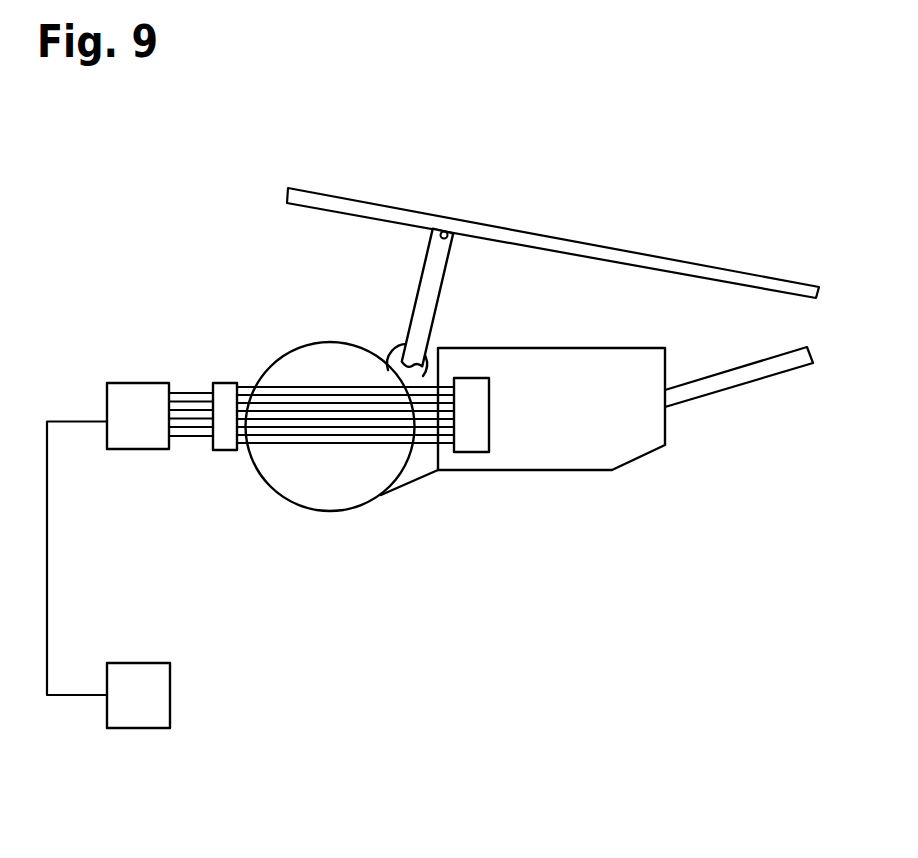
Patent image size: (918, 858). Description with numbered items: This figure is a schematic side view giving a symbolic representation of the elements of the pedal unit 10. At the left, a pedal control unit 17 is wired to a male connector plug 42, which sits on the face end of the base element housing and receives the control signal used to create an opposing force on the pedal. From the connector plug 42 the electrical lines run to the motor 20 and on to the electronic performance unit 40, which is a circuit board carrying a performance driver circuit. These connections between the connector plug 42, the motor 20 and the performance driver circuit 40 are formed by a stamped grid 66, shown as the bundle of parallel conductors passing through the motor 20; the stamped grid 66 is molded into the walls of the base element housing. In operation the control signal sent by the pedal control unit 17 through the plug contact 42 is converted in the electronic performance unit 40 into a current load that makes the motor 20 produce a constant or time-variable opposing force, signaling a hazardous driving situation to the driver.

The pedal unit 10 is at (752, 213).
The pedal control unit 17 is at (158, 713).
The motor 20 is at (320, 509).
The electronic performance unit 40 is at (575, 472).
The male connector plug 42 is at (111, 383).
The stamped grid 66 is at (253, 385).